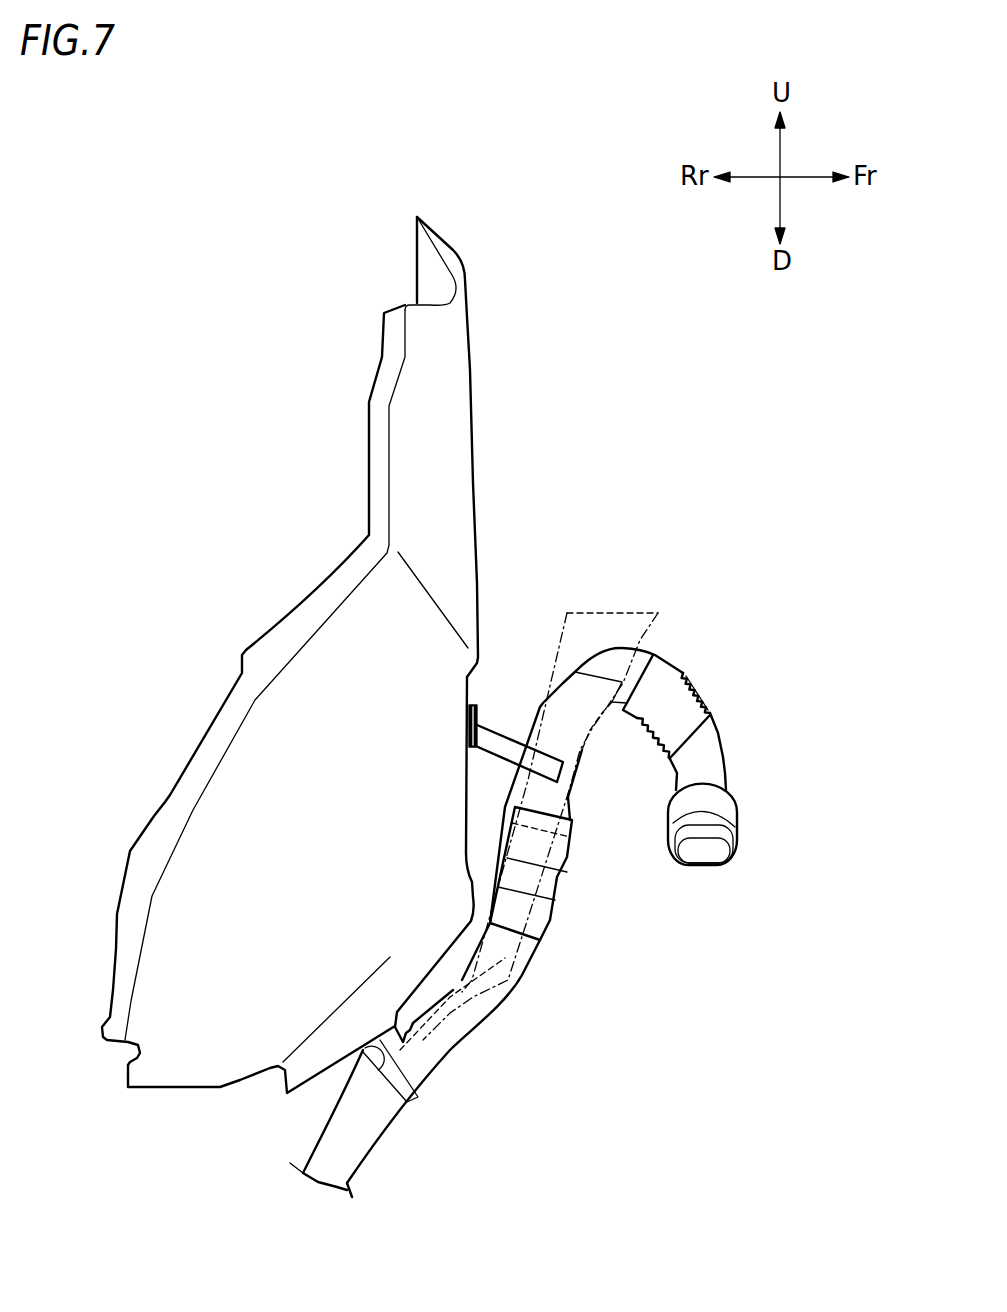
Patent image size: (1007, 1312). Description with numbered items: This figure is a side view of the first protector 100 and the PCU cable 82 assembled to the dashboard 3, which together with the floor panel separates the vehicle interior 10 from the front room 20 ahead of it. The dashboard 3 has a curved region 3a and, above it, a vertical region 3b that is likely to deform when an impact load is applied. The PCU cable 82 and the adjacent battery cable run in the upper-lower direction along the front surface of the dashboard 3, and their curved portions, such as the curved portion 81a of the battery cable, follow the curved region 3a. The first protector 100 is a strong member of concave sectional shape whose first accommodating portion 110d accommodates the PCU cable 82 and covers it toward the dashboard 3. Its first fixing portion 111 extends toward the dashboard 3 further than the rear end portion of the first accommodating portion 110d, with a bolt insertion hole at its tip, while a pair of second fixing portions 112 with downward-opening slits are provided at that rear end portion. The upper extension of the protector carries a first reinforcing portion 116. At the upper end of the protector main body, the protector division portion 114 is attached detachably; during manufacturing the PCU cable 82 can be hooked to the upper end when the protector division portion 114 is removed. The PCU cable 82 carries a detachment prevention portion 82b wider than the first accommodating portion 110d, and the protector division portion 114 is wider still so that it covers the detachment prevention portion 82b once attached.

The dashboard 3 is at (470, 372).
The curved region 3a is at (470, 916).
The vertical region 3b is at (470, 767).
The vehicle interior 10 is at (276, 401).
The front room 20 is at (621, 293).
The first protector 100 is at (547, 604).
The first fixing portion 111 is at (502, 745).
The second fixing portion 112 is at (370, 1065).
The protector division portion 114 is at (645, 637).
The first reinforcing portion 116 is at (557, 887).
The PCU cable 82 is at (708, 773).
The detachment prevention portion 82b is at (700, 690).
The curved portion 81a is at (503, 960).
The first accommodating portion 110d is at (470, 1010).